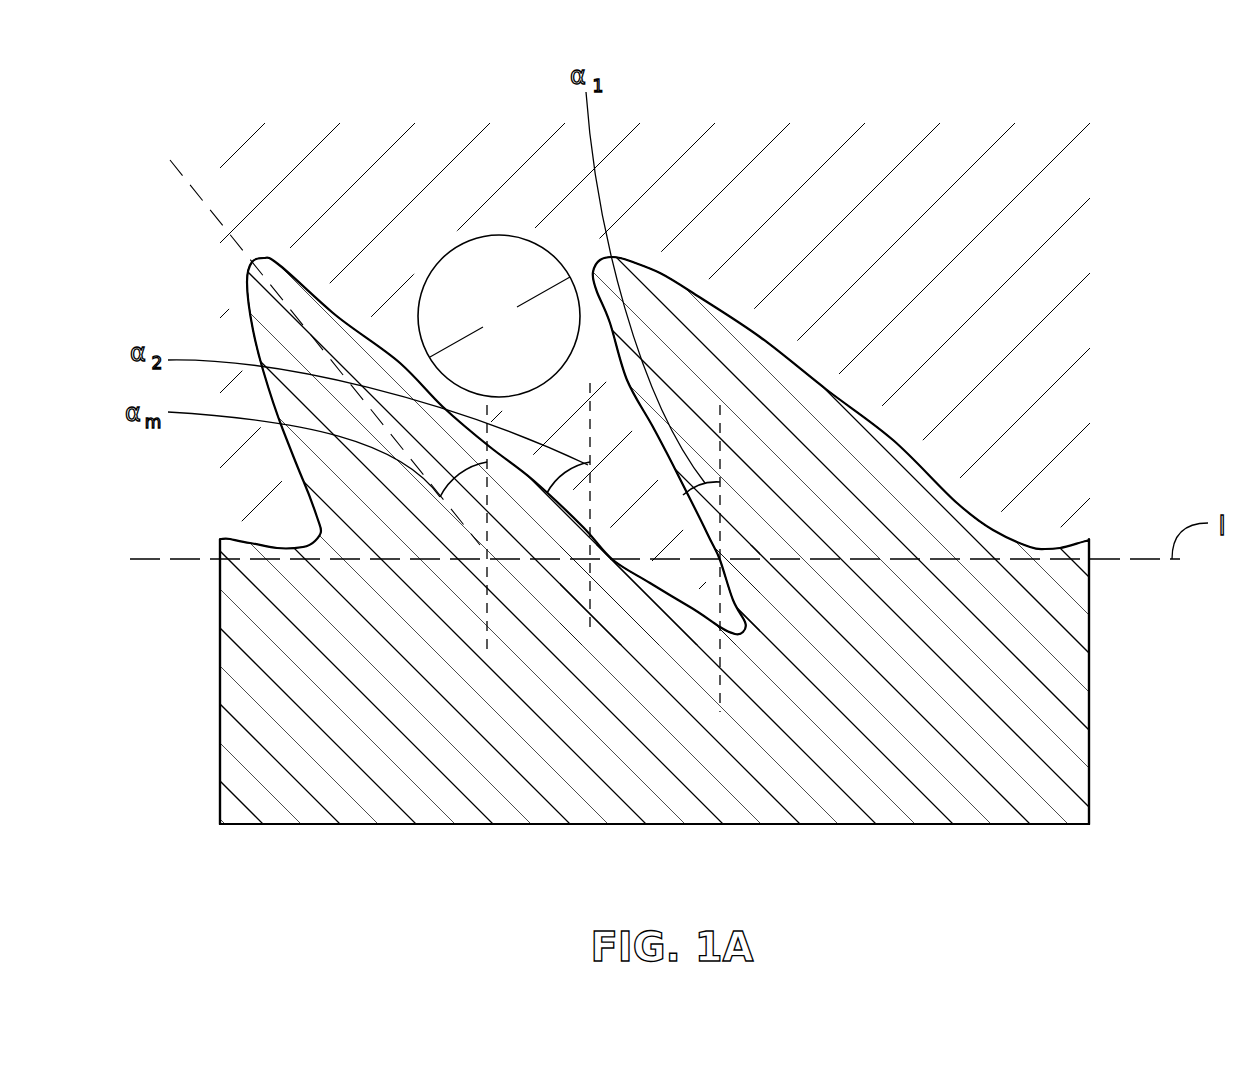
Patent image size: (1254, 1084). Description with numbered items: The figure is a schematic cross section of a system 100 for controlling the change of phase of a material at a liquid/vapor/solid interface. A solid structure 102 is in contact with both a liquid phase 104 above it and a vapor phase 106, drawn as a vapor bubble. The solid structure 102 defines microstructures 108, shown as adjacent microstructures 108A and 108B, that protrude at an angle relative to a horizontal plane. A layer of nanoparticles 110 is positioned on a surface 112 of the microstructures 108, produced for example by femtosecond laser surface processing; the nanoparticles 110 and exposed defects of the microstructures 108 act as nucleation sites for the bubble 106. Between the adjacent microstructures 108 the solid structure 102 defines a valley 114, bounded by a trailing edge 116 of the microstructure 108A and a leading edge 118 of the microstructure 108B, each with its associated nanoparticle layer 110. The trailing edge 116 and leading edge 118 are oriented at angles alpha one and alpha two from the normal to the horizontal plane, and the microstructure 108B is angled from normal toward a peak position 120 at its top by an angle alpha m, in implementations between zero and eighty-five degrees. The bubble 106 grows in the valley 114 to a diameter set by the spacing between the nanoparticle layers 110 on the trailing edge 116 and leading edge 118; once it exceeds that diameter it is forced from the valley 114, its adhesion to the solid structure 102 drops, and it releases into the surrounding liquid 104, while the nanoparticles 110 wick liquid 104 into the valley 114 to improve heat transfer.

The system 100 is at (212, 74).
The solid structure 102 is at (1038, 824).
The liquid phase 104 is at (1047, 133).
The vapor phase 106 is at (492, 263).
The microstructures 108 is at (960, 438).
The microstructure 108A is at (805, 428).
The microstructure 108B is at (363, 520).
The layer of nanoparticles 110 is at (787, 337).
The surface of the microstructures 112 is at (667, 270).
The valley 114 is at (690, 470).
The trailing edge 116 is at (630, 515).
The leading edge 118 is at (523, 477).
The peak position 120 is at (250, 262).